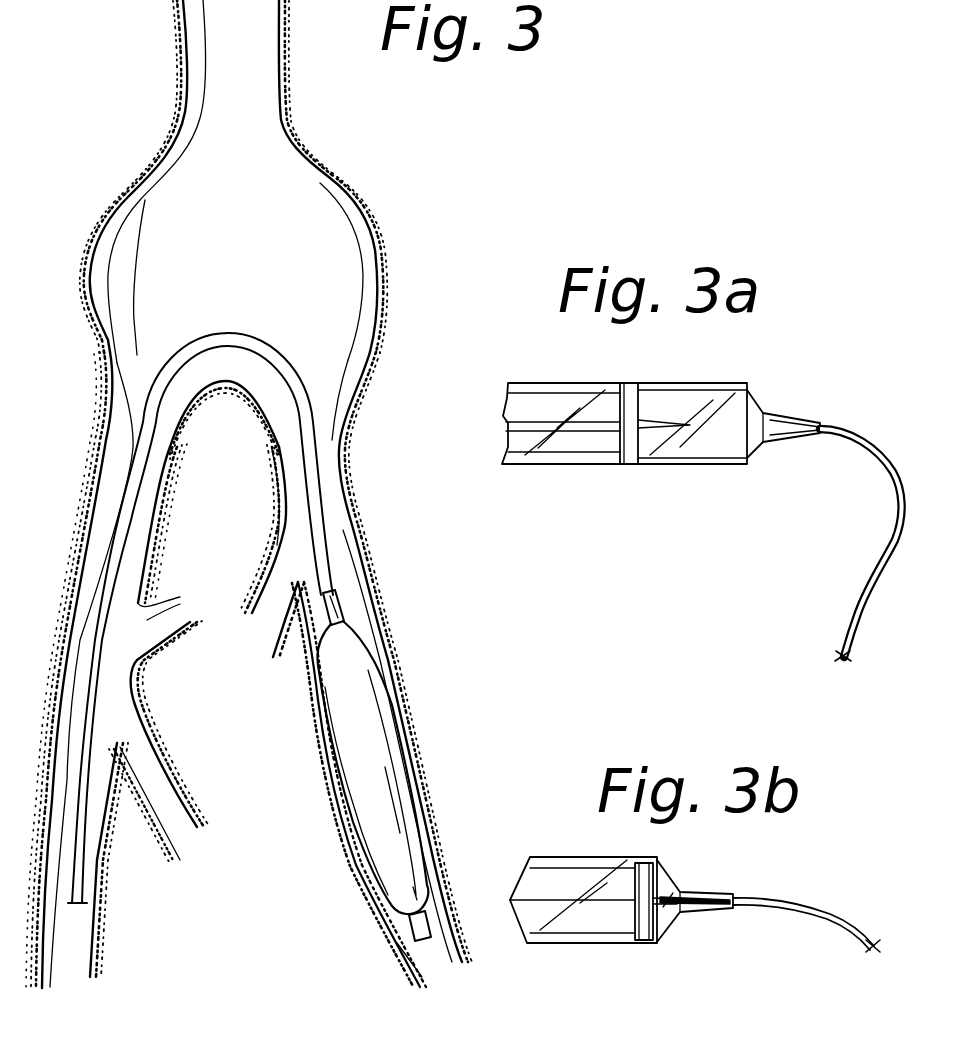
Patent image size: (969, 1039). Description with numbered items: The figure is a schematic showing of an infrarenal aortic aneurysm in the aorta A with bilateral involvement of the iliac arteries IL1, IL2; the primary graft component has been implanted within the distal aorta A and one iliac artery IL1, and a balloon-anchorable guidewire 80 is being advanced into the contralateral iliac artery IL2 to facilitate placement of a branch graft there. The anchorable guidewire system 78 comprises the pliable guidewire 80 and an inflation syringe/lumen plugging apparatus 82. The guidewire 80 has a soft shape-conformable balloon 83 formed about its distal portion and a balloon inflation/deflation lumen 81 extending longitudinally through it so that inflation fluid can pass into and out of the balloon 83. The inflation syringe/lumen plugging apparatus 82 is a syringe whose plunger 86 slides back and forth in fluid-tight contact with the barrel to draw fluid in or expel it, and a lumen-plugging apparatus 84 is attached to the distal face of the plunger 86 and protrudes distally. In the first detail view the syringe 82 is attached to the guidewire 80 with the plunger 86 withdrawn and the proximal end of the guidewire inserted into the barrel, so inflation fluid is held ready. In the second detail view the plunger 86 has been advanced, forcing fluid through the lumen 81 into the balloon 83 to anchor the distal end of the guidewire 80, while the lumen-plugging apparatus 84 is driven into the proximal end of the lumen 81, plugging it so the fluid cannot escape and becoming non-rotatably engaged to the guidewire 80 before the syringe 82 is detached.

In FIG. 3, the aorta A is at (252, 76).
In FIG. 3, the iliac artery IL1 is at (110, 473).
In FIG. 3, the iliac artery IL2 is at (343, 533).
In FIG. 3, the pliable guidewire 80 is at (287, 353).
In FIG. 3A, the pliable guidewire 80 is at (863, 440).
In FIG. 3B, the pliable guidewire 80 is at (790, 917).
In FIG. 3, the balloon 83 is at (362, 680).
In FIG. 3A, the anchorable guidewire system 78 is at (702, 497).
In FIG. 3B, the anchorable guidewire system 78 is at (695, 905).
In FIG. 3A, the inflation syringe/lumen plugging apparatus 82 is at (700, 464).
In FIG. 3B, the inflation syringe/lumen plugging apparatus 82 is at (627, 857).
In FIG. 3A, the lumen-plugging apparatus 84 is at (671, 421).
In FIG. 3B, the lumen-plugging apparatus 84 is at (707, 893).
In FIG. 3A, the plunger 86 is at (597, 442).
In FIG. 3B, the plunger 86 is at (632, 920).
In FIG. 3A, the balloon inflation/deflation lumen 81 is at (836, 663).
In FIG. 3B, the balloon inflation/deflation lumen 81 is at (872, 947).